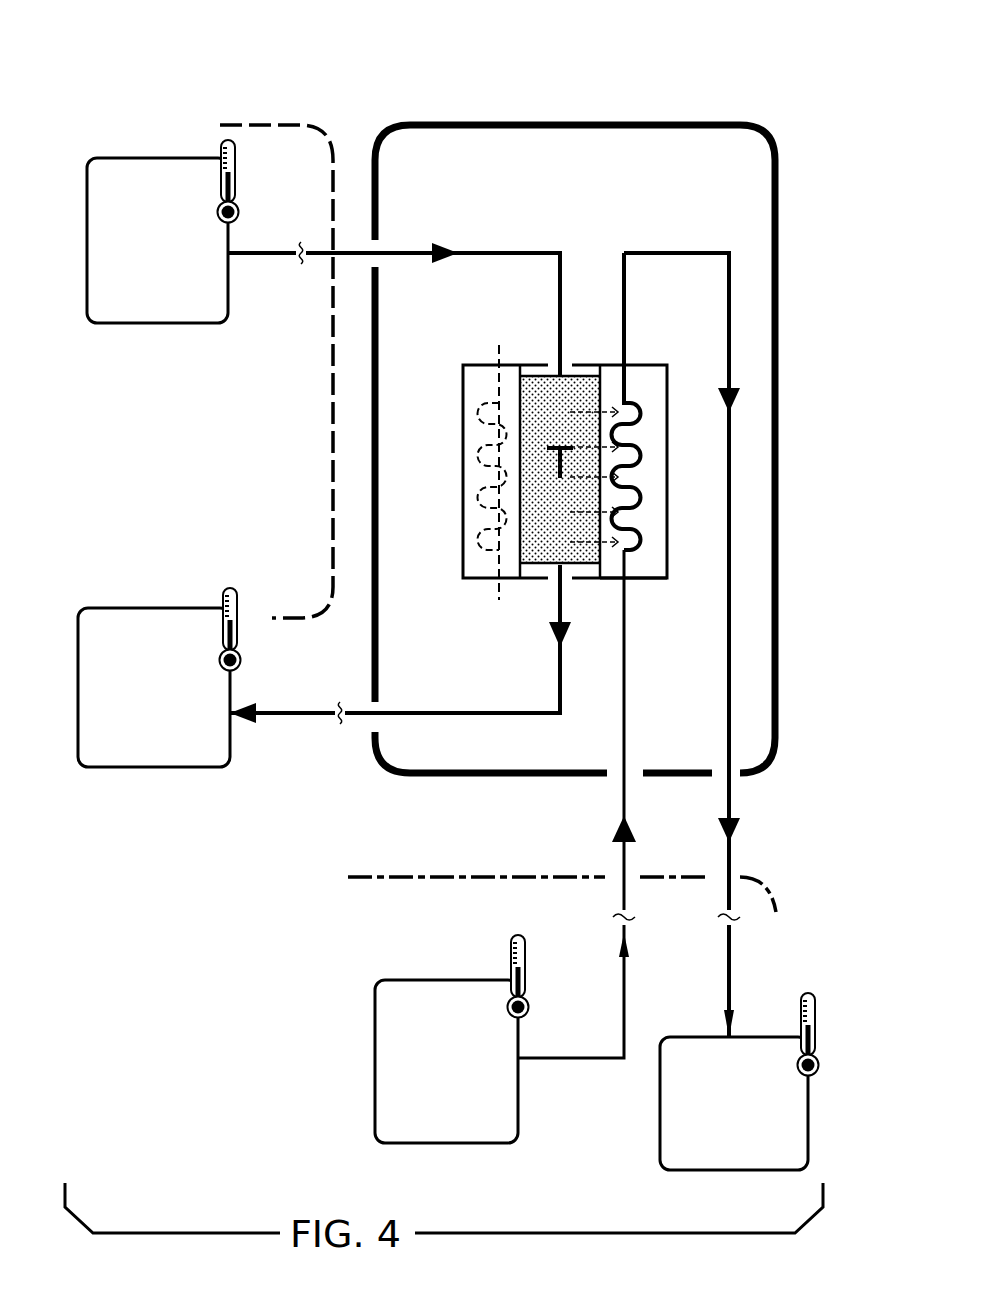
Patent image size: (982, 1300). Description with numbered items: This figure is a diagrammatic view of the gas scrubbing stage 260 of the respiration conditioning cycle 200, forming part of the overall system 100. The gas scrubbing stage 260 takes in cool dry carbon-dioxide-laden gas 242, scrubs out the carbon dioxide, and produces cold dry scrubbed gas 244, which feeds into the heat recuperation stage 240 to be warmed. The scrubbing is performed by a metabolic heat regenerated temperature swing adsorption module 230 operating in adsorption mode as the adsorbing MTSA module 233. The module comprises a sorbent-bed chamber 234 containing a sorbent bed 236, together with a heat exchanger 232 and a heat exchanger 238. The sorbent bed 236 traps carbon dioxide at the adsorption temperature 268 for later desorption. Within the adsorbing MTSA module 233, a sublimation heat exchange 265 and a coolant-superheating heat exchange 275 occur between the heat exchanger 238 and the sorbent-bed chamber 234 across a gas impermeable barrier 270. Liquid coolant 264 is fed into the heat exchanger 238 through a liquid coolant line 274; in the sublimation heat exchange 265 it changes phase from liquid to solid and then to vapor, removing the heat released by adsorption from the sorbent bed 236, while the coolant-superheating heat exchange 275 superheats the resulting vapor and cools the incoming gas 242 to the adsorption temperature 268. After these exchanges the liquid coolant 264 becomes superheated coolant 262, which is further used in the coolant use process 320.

The carbon dioxide scrubbing system 100 is at (290, 50).
The respiration conditioning cycle 200 is at (430, 50).
The heat recuperation stage 240 is at (292, 124).
The gas scrubbing stage 260 is at (660, 124).
The cool dry carbon-dioxide-laden gas 242 is at (128, 325).
The cold dry scrubbed gas 244 is at (120, 769).
The adsorbing MTSA module 233 is at (593, 320).
The metabolic heat regenerated temperature swing adsorption module 230 is at (542, 362).
The sorbent-bed chamber 234 is at (530, 427).
The sorbent bed 236 is at (527, 393).
The adsorption temperature 268 is at (558, 467).
The sublimation heat exchange 265 is at (606, 412).
The heat exchanger 232 is at (497, 550).
The heat exchanger 238 is at (640, 516).
The coolant-superheating heat exchange 275 is at (607, 573).
The gas impermeable barrier 270 is at (624, 555).
The liquid coolant line 274 is at (623, 885).
The coolant use process 320 is at (400, 876).
The liquid coolant 264 is at (403, 1146).
The superheated coolant 262 is at (696, 1173).